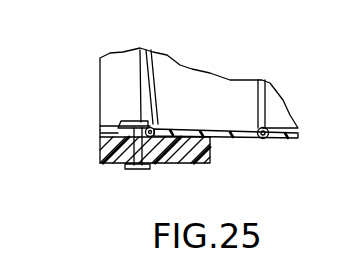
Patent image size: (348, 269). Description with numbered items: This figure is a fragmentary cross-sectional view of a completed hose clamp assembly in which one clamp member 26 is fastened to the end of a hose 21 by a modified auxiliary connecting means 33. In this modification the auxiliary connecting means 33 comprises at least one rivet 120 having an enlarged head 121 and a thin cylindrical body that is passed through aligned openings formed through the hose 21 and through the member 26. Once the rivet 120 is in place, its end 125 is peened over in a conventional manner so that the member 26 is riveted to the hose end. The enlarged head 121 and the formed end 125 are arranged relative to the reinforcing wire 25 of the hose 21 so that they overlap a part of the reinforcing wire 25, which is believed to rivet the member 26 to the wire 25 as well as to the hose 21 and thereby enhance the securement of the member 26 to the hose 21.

The hose 21 is at (188, 72).
The auxiliary connecting means 33 is at (126, 110).
The enlarged head 121 is at (120, 123).
The reinforcing wire 25 is at (158, 126).
The rivet 120 is at (103, 148).
The member 26 is at (187, 160).
The end 125 is at (133, 172).